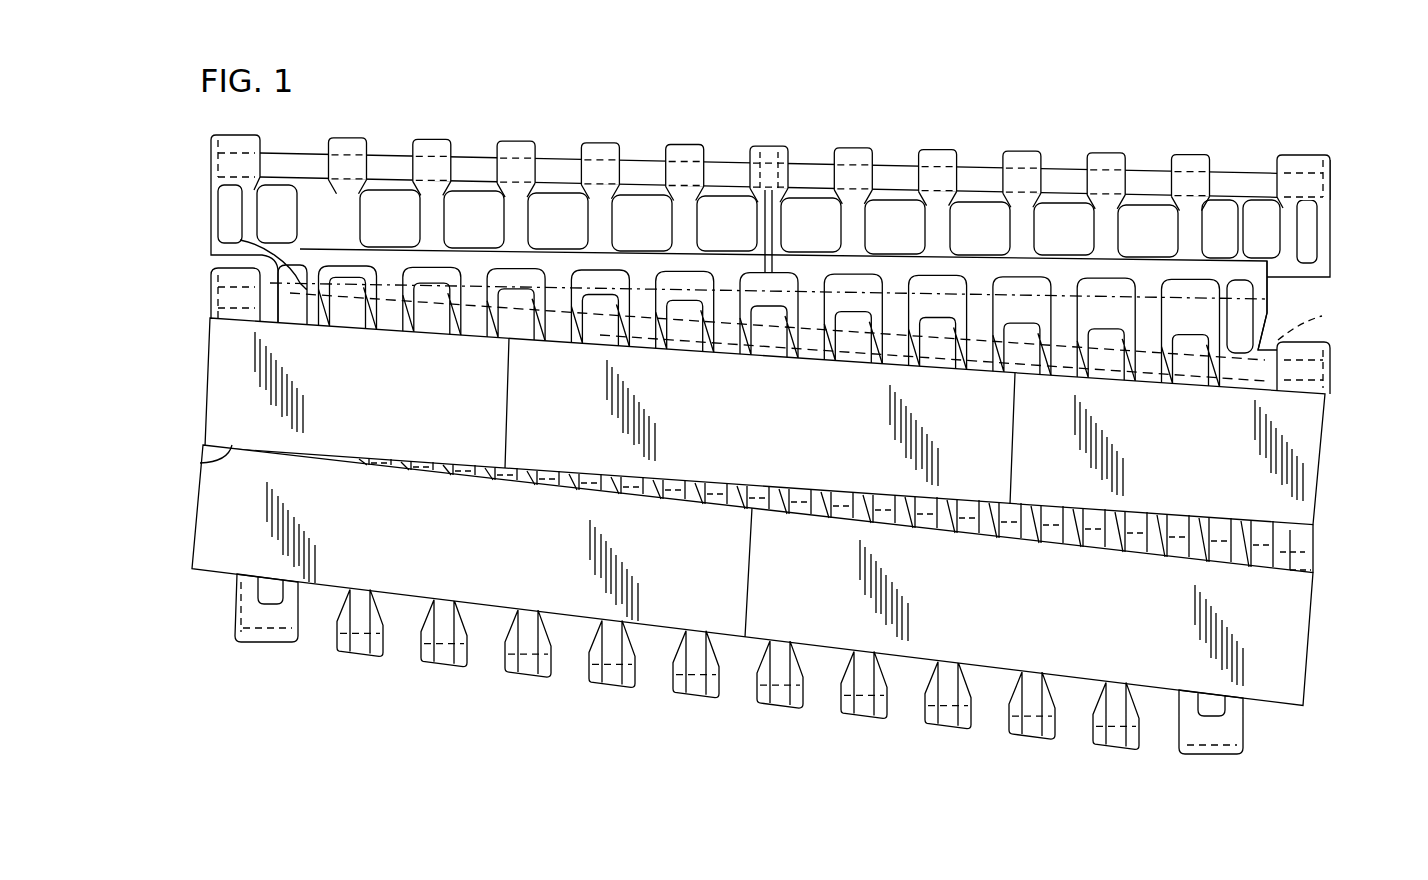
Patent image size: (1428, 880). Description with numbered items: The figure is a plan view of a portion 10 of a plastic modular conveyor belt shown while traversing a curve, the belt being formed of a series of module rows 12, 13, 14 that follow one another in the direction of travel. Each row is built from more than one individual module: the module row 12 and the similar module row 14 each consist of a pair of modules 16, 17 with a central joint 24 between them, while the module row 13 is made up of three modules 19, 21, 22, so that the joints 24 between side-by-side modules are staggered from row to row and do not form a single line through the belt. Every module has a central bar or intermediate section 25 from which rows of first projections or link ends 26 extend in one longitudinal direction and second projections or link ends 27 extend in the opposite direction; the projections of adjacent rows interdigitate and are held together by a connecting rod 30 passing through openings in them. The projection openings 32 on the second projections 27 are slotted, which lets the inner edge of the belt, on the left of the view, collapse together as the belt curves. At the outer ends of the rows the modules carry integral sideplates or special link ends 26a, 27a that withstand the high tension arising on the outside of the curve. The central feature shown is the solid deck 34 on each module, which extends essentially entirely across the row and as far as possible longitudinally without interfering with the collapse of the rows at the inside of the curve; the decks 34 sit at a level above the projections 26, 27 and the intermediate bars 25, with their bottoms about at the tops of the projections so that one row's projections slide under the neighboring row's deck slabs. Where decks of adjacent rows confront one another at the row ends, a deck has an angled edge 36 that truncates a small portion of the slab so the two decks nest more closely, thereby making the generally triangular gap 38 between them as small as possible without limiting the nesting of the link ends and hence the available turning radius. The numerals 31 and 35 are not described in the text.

The portion of conveyor belt 10 is at (234, 660).
The module row 12 is at (206, 172).
The module row 13 is at (198, 337).
The module row 14 is at (193, 497).
The module 16 is at (531, 134).
The module 17 is at (1026, 147).
The module 19 is at (201, 264).
The module 21 is at (1334, 349).
The module 22 is at (857, 300).
The joint 24 is at (770, 145).
The intermediate section 25 is at (378, 250).
The first projections 26 is at (343, 137).
The special link end 26a is at (1312, 152).
The second projections 27 is at (340, 656).
The special link end 27a is at (1268, 312).
The connecting rod 30 is at (1300, 330).
The carrier rail 31 is at (1058, 163).
The projection openings 32 is at (235, 632).
The solid deck 34 is at (332, 398).
The slot 35 is at (1243, 155).
The angled edge 36 is at (222, 450).
The triangular gap 38 is at (1330, 553).